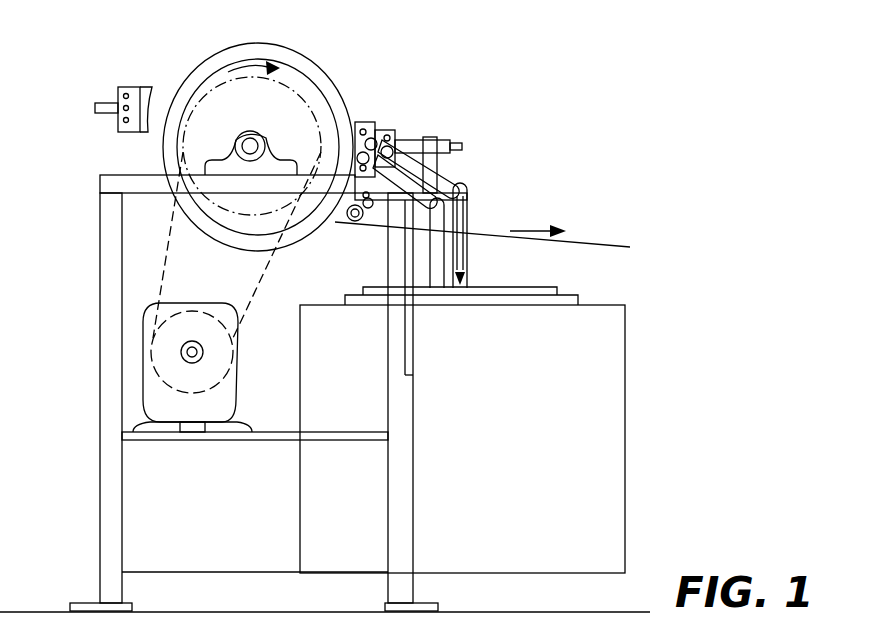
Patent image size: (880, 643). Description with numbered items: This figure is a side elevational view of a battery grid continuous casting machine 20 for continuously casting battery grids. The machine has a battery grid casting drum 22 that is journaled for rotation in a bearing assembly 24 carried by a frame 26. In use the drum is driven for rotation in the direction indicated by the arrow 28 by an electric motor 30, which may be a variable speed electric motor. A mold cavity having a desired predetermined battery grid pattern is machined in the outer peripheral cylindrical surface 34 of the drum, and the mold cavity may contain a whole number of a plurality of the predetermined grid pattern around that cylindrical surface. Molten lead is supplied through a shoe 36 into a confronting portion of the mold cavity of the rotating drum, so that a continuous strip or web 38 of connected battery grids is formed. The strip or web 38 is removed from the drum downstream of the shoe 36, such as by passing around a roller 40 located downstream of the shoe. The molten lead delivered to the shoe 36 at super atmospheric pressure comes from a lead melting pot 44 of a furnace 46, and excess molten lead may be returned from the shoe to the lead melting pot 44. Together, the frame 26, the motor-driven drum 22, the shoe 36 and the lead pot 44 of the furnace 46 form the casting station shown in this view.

The battery grid continuous casting machine 20 is at (112, 18).
The battery grid casting drum 22 is at (158, 70).
The bearing assembly 24 is at (240, 134).
The frame 26 is at (100, 273).
The arrow 28 is at (247, 63).
The electric motor 30 is at (128, 377).
The outer peripheral cylindrical surface 34 is at (318, 62).
The shoe 36 is at (383, 113).
The continuous strip or web 38 is at (597, 242).
The roller 40 is at (343, 237).
The lead melting pot 44 is at (548, 283).
The furnace 46 is at (642, 400).